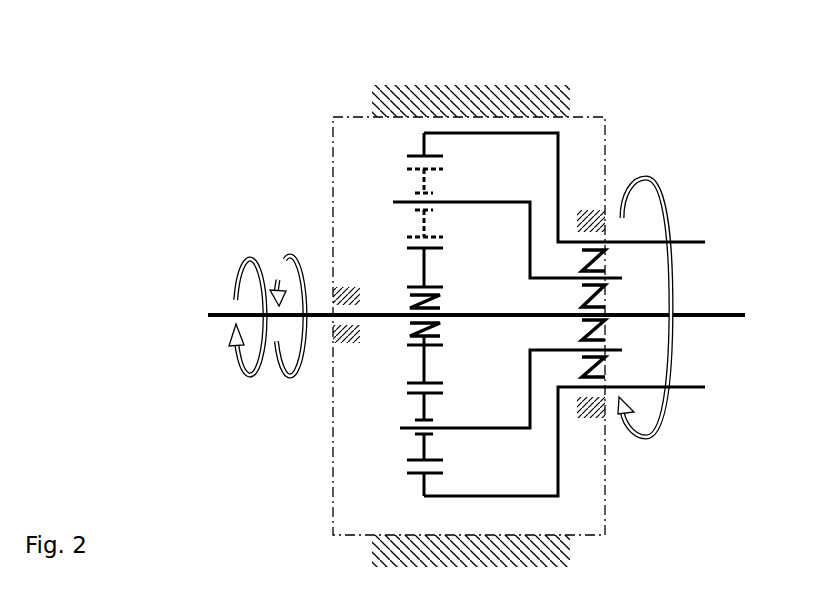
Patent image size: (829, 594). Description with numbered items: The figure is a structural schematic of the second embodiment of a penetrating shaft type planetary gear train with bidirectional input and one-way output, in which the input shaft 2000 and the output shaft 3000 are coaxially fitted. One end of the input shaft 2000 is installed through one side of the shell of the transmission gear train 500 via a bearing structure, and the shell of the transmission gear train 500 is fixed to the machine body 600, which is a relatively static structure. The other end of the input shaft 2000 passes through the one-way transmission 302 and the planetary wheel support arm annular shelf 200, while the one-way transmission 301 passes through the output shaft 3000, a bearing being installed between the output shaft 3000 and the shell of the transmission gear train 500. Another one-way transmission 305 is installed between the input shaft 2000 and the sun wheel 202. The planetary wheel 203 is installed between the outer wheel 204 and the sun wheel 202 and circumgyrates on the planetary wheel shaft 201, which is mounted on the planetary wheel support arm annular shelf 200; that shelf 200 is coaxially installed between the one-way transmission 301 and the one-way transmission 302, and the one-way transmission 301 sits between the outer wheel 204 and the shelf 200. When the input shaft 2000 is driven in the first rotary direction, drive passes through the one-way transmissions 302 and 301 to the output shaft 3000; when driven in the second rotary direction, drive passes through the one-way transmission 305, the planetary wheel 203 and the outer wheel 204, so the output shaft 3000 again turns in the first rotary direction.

The planetary wheel support arm annular shelf 200 is at (532, 225).
The planetary wheel shaft 201 is at (468, 430).
The sun wheel 202 is at (445, 383).
The planetary wheel 203 is at (407, 393).
The outer wheel 204 is at (407, 472).
The one-way transmission 301 is at (583, 373).
The one-way transmission 302 is at (583, 303).
The one-way transmission 305 is at (408, 297).
The shell of the transmission gear train 500 is at (330, 170).
The machine body 600 is at (492, 110).
The input shaft 2000 is at (226, 312).
The output shaft 3000 is at (680, 242).